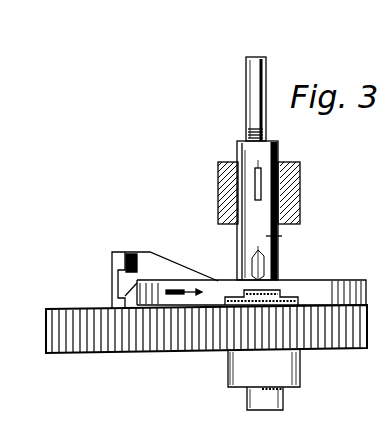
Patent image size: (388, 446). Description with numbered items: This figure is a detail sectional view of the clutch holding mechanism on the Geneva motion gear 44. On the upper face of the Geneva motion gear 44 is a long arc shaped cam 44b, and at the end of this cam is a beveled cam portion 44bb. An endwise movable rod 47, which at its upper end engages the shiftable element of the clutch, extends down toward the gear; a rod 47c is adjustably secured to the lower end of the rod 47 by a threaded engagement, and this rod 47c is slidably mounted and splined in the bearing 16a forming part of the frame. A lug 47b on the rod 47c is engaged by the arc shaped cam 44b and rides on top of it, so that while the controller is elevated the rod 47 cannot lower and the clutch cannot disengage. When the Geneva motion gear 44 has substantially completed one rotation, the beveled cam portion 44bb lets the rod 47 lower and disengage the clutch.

The endwise movable rod 47 is at (262, 68).
The bearing 16a is at (301, 190).
The lug 47b is at (252, 252).
The rod 47c is at (282, 236).
The arc shaped cam 44b is at (322, 278).
The beveled cam portion 44bb is at (118, 258).
The Geneva motion gear 44 is at (140, 351).